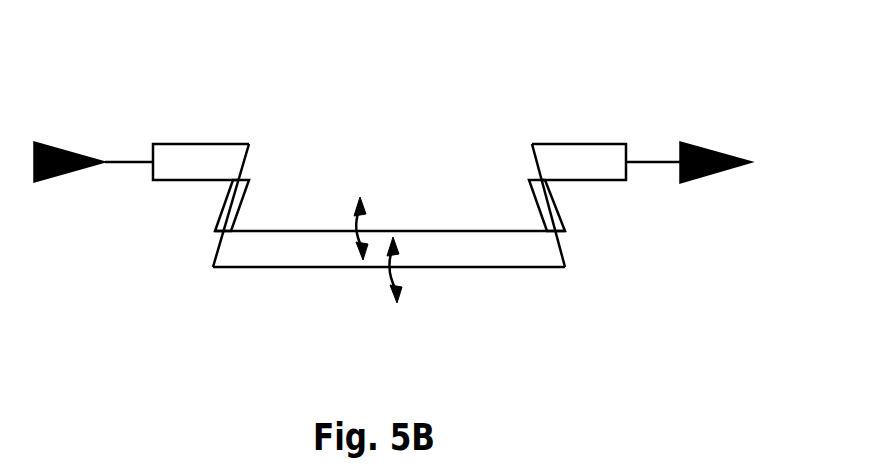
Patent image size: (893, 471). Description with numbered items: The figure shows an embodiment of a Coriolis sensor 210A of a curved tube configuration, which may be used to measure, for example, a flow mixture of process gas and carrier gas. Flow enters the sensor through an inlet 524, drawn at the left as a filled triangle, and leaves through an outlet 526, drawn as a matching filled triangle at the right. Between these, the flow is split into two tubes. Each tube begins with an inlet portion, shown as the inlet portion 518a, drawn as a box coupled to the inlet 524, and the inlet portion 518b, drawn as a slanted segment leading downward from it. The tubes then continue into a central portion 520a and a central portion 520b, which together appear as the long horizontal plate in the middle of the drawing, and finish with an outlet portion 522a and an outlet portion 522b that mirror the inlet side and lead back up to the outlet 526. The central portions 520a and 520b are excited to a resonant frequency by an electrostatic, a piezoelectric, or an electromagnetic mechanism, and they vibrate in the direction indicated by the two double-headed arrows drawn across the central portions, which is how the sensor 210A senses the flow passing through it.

The Coriolis sensor 210A is at (636, 66).
The inlet portion 518a is at (246, 160).
The inlet portion 518b is at (220, 249).
The central portion 520a is at (413, 231).
The central portion 520b is at (488, 268).
The outlet portion 522a is at (541, 160).
The outlet portion 522b is at (562, 249).
The inlet 524 is at (60, 180).
The outlet 526 is at (708, 178).